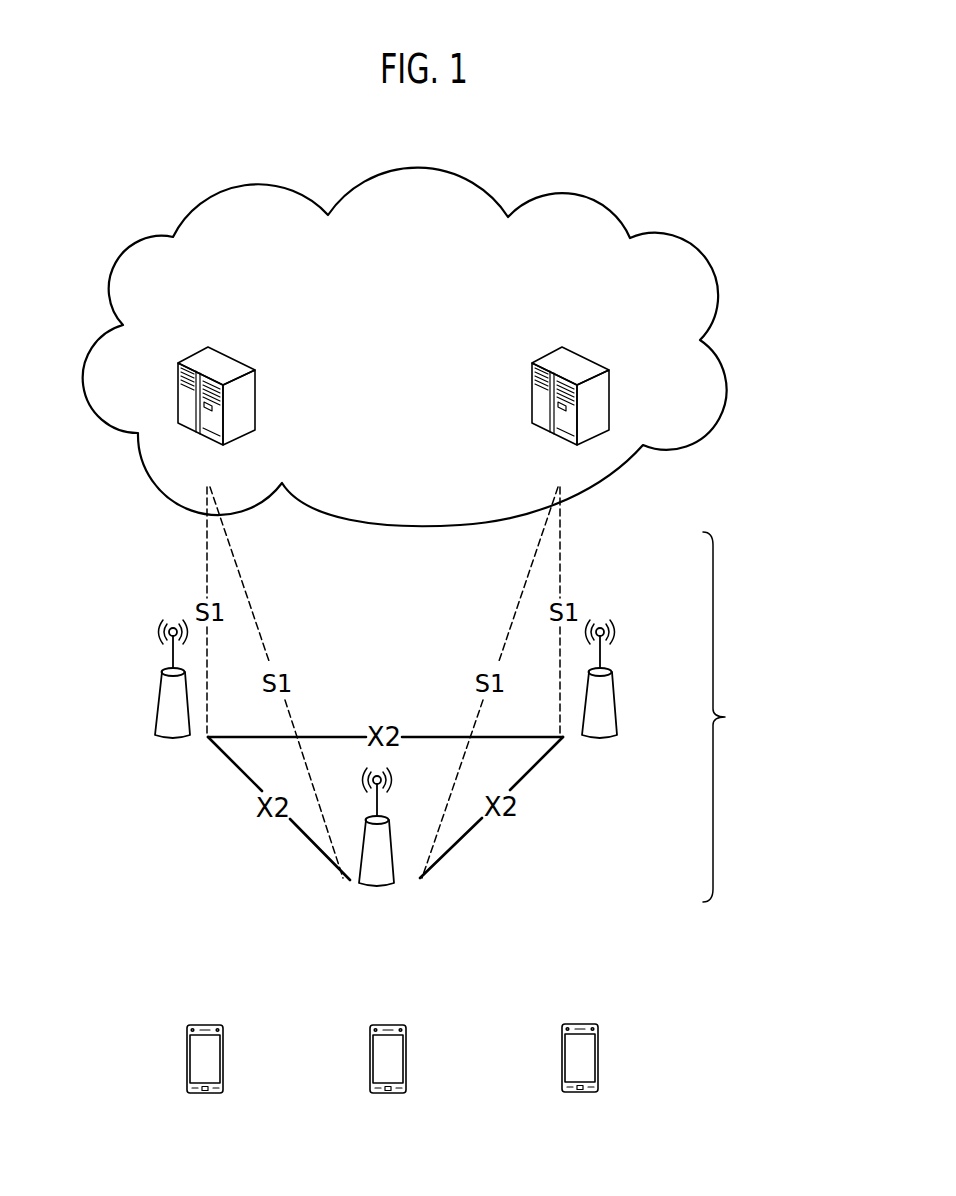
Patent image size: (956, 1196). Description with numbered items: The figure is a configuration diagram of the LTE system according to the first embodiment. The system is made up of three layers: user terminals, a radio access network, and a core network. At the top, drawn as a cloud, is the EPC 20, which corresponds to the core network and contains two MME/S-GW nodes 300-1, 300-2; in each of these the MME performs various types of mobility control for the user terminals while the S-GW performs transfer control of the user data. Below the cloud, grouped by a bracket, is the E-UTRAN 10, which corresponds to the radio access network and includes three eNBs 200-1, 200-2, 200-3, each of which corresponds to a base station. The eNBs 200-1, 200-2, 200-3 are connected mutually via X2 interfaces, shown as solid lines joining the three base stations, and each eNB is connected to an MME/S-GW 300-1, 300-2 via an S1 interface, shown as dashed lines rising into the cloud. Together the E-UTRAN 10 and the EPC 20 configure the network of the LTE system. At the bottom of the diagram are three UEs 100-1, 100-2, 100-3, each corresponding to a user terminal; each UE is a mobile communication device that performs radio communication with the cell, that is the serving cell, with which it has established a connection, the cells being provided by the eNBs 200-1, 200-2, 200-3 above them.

The E-UTRAN 10 is at (766, 717).
The EPC 20 is at (610, 203).
The UE 100-1 is at (220, 1023).
The UE 100-2 is at (392, 1023).
The UE 100-3 is at (584, 1022).
The eNB 200-1 is at (157, 700).
The eNB 200-2 is at (396, 863).
The eNB 200-3 is at (612, 683).
The MME/S-GW 300-1 is at (238, 356).
The MME/S-GW 300-2 is at (597, 335).